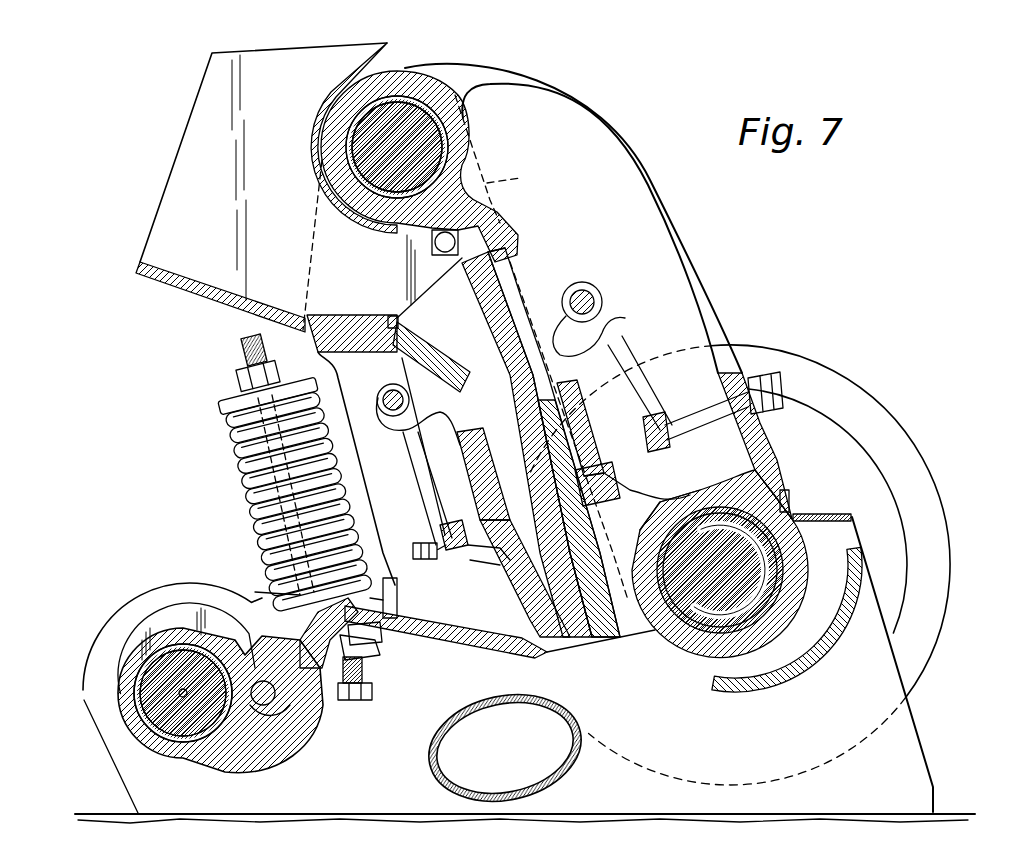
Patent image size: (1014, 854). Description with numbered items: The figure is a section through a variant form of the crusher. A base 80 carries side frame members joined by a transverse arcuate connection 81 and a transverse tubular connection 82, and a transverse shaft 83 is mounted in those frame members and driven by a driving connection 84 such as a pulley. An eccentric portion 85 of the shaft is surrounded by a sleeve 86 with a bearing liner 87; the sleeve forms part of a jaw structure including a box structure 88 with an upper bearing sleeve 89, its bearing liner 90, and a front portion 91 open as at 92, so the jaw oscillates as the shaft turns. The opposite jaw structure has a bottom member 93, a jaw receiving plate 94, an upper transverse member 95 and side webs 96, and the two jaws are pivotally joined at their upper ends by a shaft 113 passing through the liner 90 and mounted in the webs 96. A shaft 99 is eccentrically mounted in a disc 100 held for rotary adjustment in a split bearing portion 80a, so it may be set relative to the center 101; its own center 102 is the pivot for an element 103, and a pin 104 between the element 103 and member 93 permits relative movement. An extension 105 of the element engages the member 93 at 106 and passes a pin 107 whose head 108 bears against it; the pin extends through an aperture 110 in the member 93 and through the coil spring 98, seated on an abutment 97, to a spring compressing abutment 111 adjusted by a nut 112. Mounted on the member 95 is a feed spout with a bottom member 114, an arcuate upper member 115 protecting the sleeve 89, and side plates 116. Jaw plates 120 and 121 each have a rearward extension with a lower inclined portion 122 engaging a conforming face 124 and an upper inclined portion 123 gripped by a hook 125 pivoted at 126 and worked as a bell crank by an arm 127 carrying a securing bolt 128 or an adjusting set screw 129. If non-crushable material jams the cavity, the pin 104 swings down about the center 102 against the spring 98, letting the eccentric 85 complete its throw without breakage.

The base 80 is at (138, 786).
The split bearing portion 80a is at (152, 590).
The transverse arcuate connection 81 is at (820, 640).
The transverse tubular connection 82 is at (580, 765).
The transverse shaft 83 is at (707, 630).
The driving connection 84 is at (940, 480).
The eccentric portion 85 is at (685, 615).
The sleeve 86 is at (690, 640).
The bearing liner 87 is at (760, 593).
The box structure 88 is at (725, 310).
The upper bearing sleeve 89 is at (458, 140).
The bearing liner 90 is at (440, 125).
The front portion 91 is at (508, 262).
The opening 92 is at (518, 290).
The bottom member 93 is at (465, 635).
The jaw receiving plate 94 is at (520, 600).
The upper transverse member 95 is at (363, 345).
The side members 96 is at (310, 358).
The abutment 97 is at (388, 602).
The coil spring 98 is at (245, 490).
The shaft 99 is at (148, 708).
The disc 100 is at (180, 605).
The center 101 is at (188, 670).
The center 102 is at (183, 693).
The element 103 is at (260, 770).
The pin 104 is at (318, 715).
The extension 105 is at (372, 645).
The engagement point 106 is at (305, 705).
The pin 107 is at (243, 352).
The head 108 is at (405, 680).
The aperture 110 is at (383, 632).
The spring compressing abutment 111 is at (220, 406).
The adjusting nut 112 is at (240, 377).
The shaft 113 is at (452, 150).
The bottom member 114 is at (215, 290).
The arcuate upper member 115 is at (318, 178).
The side plates 116 is at (190, 160).
The plate 120 is at (492, 300).
The plate 121 is at (440, 352).
The lower inclined portion 122 is at (475, 556).
The upper inclined portion 123 is at (480, 440).
The conforming face 124 is at (505, 555).
The hook 125 is at (455, 410).
The pivot 126 is at (383, 395).
The arm 127 is at (420, 468).
The securing bolt 128 is at (685, 420).
The adjusting set screw 129 is at (424, 540).